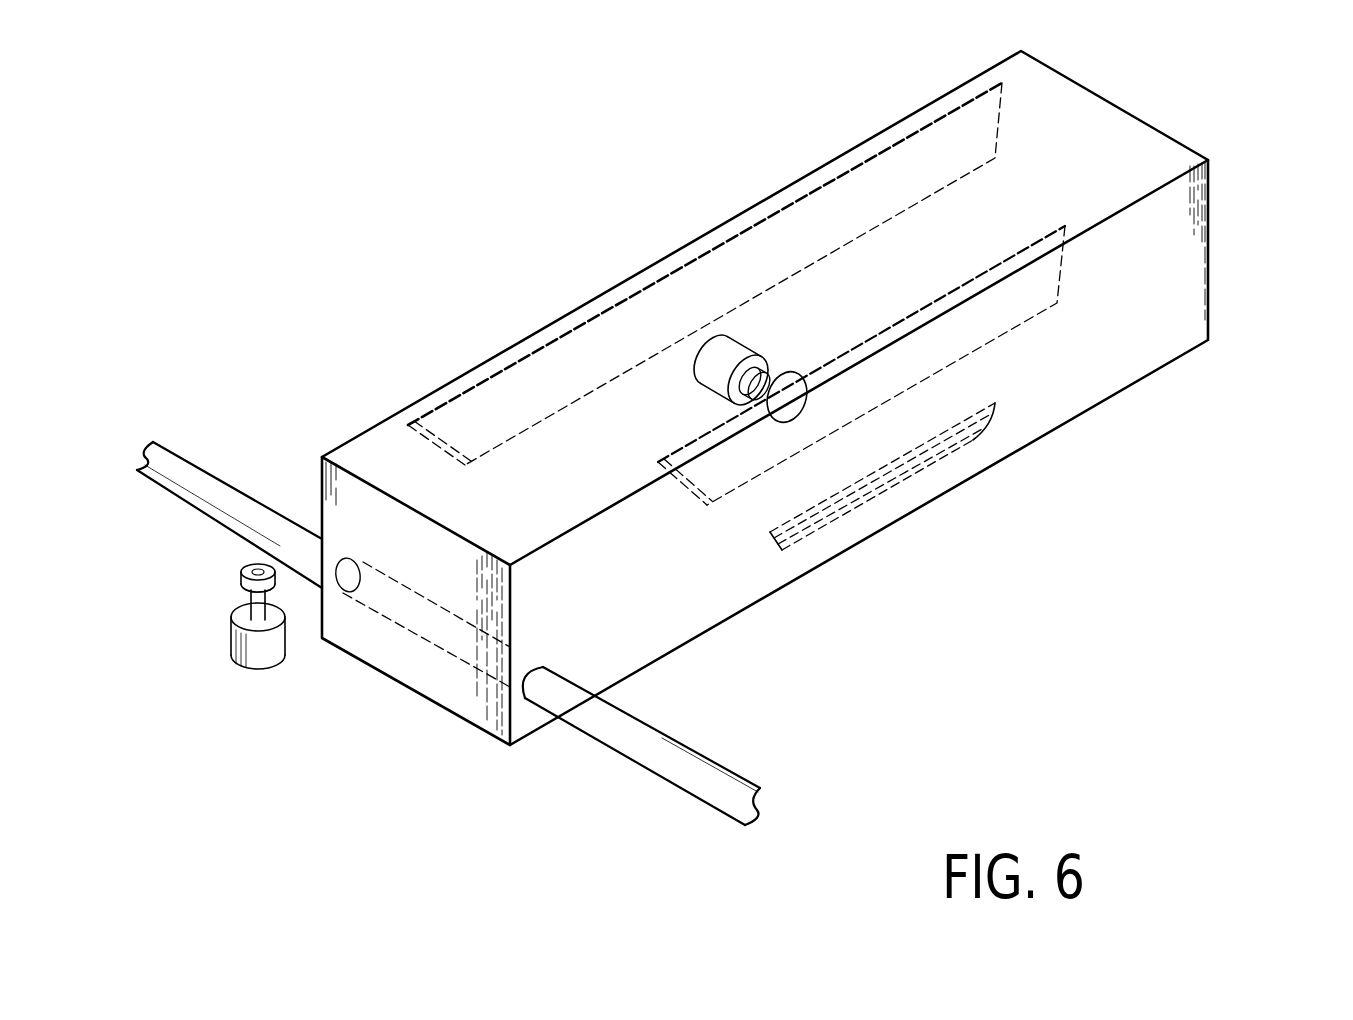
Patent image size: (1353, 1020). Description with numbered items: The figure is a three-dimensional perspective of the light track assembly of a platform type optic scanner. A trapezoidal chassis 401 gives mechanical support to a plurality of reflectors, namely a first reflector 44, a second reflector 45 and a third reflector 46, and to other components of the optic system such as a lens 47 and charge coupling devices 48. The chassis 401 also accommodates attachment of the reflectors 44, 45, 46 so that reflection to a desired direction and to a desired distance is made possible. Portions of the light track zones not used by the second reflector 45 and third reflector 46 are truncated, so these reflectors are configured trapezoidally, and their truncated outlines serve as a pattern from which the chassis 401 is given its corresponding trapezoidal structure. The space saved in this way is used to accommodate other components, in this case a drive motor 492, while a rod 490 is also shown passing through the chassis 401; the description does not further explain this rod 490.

The trapezoidal chassis 401 is at (828, 398).
The first reflector 44 is at (555, 372).
The second reflector 45 is at (1040, 307).
The third reflector 46 is at (1137, 335).
The lens 47 is at (792, 375).
The charge coupling devices 48 is at (720, 355).
The rod 490 is at (685, 760).
The drive motor 492 is at (277, 653).